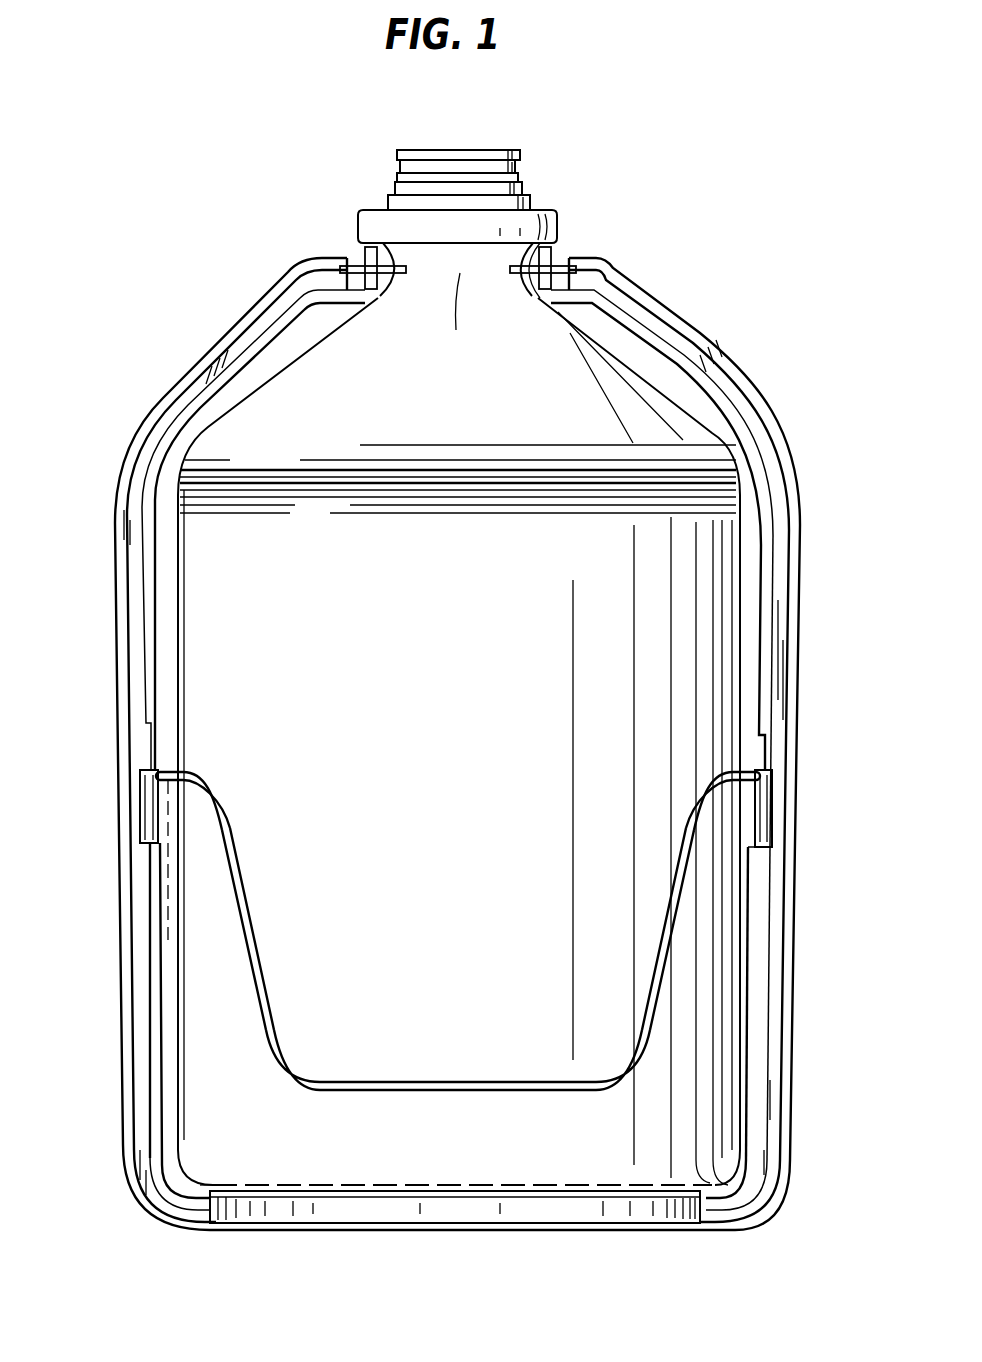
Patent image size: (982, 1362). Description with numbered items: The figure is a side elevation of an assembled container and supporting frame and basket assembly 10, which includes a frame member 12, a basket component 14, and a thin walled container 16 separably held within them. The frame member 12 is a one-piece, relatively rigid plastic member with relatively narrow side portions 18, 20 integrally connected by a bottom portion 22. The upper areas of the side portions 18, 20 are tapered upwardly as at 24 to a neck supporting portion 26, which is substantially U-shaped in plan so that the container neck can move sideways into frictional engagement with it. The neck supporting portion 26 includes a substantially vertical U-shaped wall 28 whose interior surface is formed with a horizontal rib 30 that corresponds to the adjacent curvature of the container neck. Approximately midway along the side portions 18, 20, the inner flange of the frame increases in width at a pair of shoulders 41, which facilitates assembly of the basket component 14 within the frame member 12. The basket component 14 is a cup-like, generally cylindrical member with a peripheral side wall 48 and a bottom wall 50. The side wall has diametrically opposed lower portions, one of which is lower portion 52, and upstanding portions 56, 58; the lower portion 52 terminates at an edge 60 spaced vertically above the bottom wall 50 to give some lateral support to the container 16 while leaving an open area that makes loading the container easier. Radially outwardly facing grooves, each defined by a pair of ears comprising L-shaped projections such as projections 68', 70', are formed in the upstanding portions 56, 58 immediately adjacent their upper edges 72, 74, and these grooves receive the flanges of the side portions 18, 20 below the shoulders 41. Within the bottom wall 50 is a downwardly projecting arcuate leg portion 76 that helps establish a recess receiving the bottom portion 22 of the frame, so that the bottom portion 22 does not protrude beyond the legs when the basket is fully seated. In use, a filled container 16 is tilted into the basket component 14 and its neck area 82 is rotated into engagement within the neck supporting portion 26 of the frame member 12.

The container and supporting frame and basket assembly 10 is at (738, 240).
The frame member 12 is at (810, 536).
The basket component 14 is at (248, 908).
The thin walled container 16 is at (190, 572).
The side portion 18 is at (118, 868).
The side portion 20 is at (803, 742).
The bottom portion 22 is at (720, 1231).
The tapered upper area 24 is at (230, 330).
The neck supporting portion 26 is at (585, 251).
The vertical U-shaped wall 28 is at (358, 262).
The horizontal rib 30 is at (399, 272).
The shoulder 41 is at (150, 725).
The peripheral side wall 48 is at (240, 1120).
The bottom wall 50 is at (343, 1183).
The lower portion 52 is at (458, 1100).
The upstanding portion 56 is at (227, 957).
The upstanding portion 58 is at (712, 956).
The edge 60 is at (330, 1078).
The L-shaped projection 68' is at (107, 806).
The L-shaped projection 70' is at (811, 813).
The upper edge 72 is at (180, 768).
The upper edge 74 is at (727, 770).
The arcuate leg portion 76 is at (455, 1232).
The neck area 82 is at (458, 296).